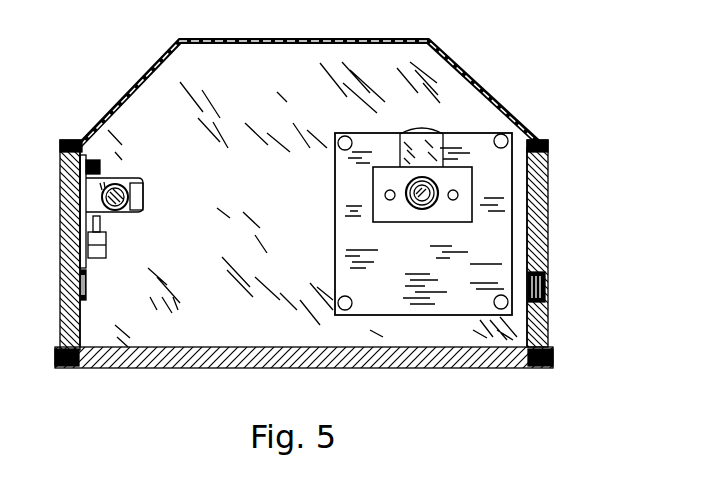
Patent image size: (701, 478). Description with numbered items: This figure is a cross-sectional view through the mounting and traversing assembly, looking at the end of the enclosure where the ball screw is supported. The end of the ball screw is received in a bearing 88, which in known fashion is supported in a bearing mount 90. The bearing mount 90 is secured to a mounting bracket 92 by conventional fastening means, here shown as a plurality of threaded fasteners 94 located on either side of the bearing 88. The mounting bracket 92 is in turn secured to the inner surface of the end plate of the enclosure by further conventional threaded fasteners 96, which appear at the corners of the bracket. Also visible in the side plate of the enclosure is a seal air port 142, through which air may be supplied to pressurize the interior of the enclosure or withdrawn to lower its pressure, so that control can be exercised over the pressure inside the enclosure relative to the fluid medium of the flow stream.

The bearing 88 is at (426, 210).
The bearing mount 90 is at (392, 222).
The mounting bracket 92 is at (335, 264).
The threaded fasteners 94 is at (385, 195).
The threaded fasteners 96 is at (345, 136).
The seal air port 142 is at (547, 288).